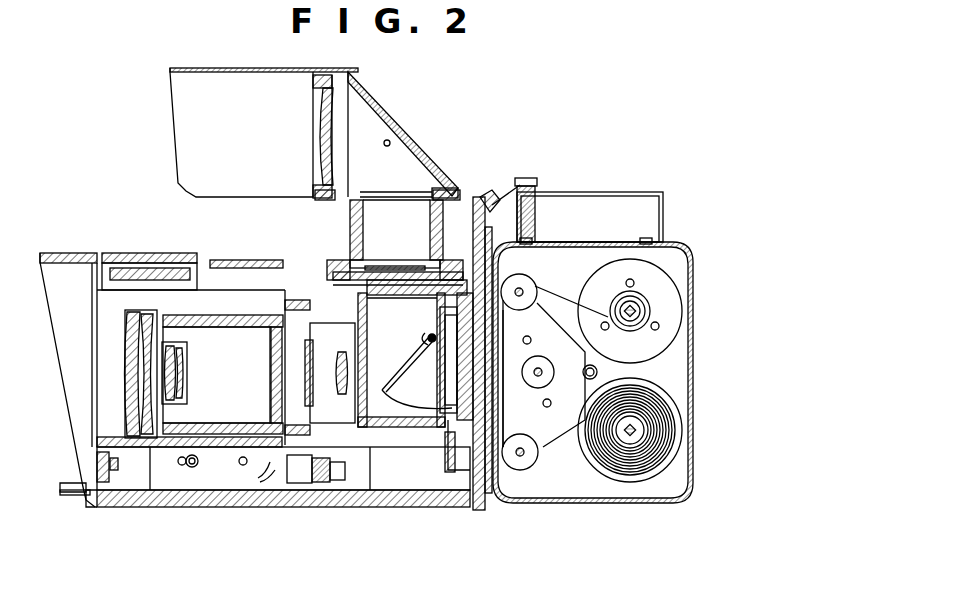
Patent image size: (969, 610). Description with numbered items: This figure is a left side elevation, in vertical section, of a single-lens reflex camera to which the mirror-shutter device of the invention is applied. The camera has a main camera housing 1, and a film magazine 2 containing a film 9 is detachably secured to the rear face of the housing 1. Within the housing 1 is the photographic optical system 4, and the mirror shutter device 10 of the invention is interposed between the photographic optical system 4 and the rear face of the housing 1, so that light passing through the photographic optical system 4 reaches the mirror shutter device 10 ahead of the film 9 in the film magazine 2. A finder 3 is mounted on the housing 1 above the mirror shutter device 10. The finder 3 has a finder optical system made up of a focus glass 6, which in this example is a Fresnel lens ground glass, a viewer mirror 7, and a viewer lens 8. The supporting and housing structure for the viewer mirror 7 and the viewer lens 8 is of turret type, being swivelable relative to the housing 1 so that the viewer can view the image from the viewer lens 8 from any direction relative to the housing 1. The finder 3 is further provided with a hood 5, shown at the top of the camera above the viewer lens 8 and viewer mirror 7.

The main camera housing 1 is at (322, 498).
The film magazine 2 is at (700, 360).
The finder 3 is at (440, 163).
The photographic optical system 4 is at (219, 400).
The hood 5 is at (237, 70).
The focus glass 6 is at (383, 268).
The viewer mirror 7 is at (398, 143).
The viewer lens 8 is at (330, 128).
The film 9 is at (548, 450).
The mirror shutter device 10 is at (413, 390).